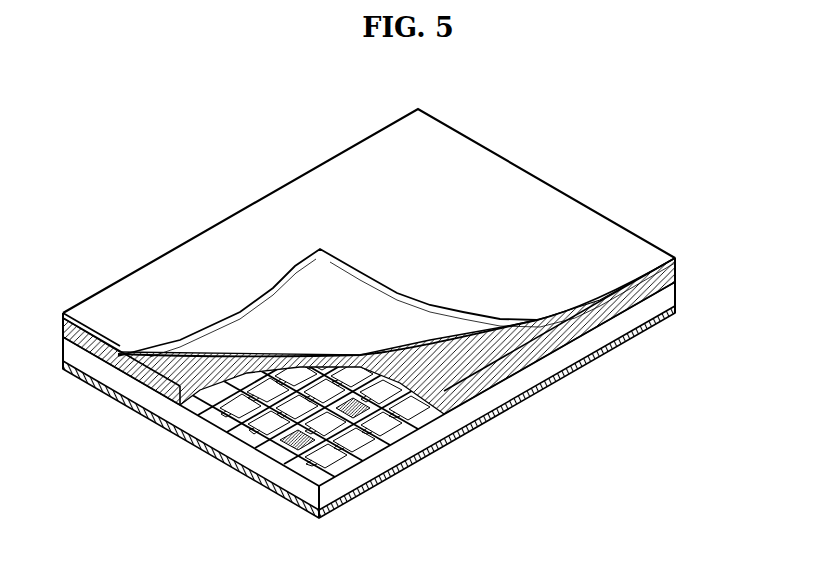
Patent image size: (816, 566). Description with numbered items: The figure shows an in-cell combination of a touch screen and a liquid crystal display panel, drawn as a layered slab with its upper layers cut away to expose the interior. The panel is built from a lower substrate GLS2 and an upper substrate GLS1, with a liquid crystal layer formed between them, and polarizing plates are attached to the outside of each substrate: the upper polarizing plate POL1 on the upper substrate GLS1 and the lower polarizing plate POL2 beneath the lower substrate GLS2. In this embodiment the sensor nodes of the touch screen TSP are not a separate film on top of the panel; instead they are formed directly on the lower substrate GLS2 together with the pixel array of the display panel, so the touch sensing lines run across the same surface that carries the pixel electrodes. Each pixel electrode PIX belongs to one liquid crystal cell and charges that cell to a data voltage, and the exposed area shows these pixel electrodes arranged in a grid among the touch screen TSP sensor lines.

The upper polarizing plate POL1 is at (678, 259).
The upper substrate GLS1 is at (684, 274).
The lower substrate GLS2 is at (668, 295).
The lower polarizing plate POL2 is at (678, 313).
The touch screen TSP is at (280, 453).
The pixel electrode PIX is at (310, 480).